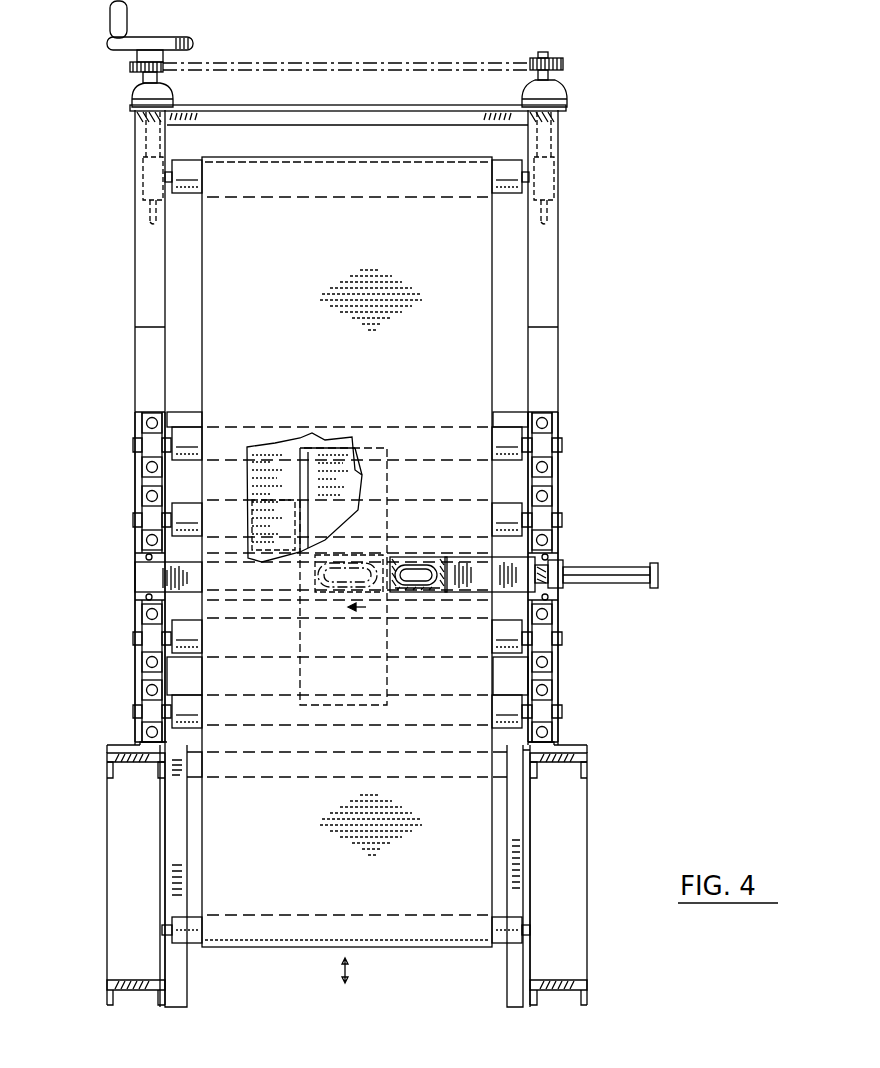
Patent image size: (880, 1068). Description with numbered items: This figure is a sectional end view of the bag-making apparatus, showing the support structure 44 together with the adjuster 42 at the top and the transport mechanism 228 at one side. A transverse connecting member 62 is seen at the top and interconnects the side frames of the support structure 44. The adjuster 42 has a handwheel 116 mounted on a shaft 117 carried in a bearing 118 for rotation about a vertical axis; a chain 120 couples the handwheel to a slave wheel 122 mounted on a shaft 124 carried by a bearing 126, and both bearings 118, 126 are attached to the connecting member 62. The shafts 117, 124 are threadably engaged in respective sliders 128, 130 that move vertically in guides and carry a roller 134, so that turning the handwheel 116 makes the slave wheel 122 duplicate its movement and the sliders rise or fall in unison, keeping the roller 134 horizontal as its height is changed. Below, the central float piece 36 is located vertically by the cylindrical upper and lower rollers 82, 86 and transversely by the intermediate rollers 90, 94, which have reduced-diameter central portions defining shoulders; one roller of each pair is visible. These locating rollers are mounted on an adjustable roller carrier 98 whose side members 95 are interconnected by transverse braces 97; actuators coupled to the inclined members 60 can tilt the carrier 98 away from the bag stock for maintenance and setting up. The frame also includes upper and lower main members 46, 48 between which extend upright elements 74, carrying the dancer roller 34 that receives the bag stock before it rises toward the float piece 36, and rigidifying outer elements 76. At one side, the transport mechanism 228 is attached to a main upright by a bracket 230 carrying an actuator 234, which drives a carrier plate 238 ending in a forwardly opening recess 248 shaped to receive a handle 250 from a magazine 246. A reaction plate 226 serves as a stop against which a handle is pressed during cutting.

The adjuster 42 is at (82, 58).
The support structure 44 is at (670, 198).
The handwheel 116 is at (165, 45).
The shaft 117 is at (160, 77).
The bearing 118 is at (132, 93).
The chain 120 is at (300, 60).
The slave wheel 122 is at (562, 66).
The shaft 124 is at (530, 75).
The bearing 126 is at (562, 96).
The slider 128 is at (141, 166).
The slider 130 is at (554, 170).
The roller 134 is at (510, 165).
The transverse connecting member 62 is at (422, 115).
The inclined member 60 is at (146, 285).
The roller carrier 98 is at (133, 378).
The side member 95 is at (145, 414).
The transverse brace 97 is at (515, 408).
The upper roller 82 is at (508, 432).
The intermediate roller 90 is at (508, 500).
The intermediate roller 94 is at (510, 627).
The lower roller 86 is at (512, 703).
The reaction plate 226 is at (152, 576).
The transport mechanism 228 is at (574, 557).
The bracket 230 is at (553, 586).
The actuator 234 is at (640, 566).
The carrier plate 238 is at (520, 556).
The magazine 246 is at (426, 594).
The recess 248 is at (420, 562).
The handle 250 is at (400, 558).
The float piece 36 is at (298, 668).
The upper main member 46 is at (107, 770).
The lower main member 48 is at (107, 999).
The rigidifying outer element 76 is at (180, 809).
The upright element 74 is at (165, 882).
The dancer roller 34 is at (506, 940).